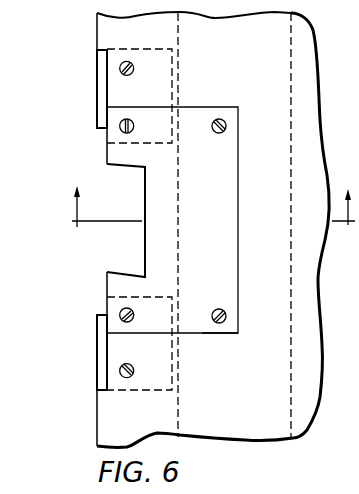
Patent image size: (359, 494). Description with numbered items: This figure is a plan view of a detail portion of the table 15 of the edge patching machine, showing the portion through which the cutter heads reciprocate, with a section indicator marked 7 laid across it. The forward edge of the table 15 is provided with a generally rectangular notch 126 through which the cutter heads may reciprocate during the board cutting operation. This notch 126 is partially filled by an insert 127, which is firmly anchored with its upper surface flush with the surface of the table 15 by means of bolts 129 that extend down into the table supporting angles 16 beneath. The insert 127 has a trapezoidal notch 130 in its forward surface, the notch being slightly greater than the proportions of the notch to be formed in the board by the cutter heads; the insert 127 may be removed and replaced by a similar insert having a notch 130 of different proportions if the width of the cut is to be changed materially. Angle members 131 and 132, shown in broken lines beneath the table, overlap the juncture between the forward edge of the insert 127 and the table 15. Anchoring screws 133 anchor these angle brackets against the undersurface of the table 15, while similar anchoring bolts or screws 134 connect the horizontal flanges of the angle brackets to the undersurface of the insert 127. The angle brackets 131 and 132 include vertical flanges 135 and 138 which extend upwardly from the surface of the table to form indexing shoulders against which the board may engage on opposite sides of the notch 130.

The section line of FIG. 7 is at (203, 211).
The table 15 is at (242, 427).
The supporting angles 16 is at (291, 390).
The rectangular notch 126 is at (202, 333).
The insert 127 is at (213, 183).
The bolts 129 is at (226, 126).
The trapezoidal notch 130 is at (145, 247).
The angle member 131 is at (140, 48).
The angle member 132 is at (133, 392).
The anchoring screws 133 is at (133, 68).
The anchoring bolts or screws 134 is at (120, 128).
The vertical flange 135 is at (107, 90).
The vertical flange 138 is at (107, 338).